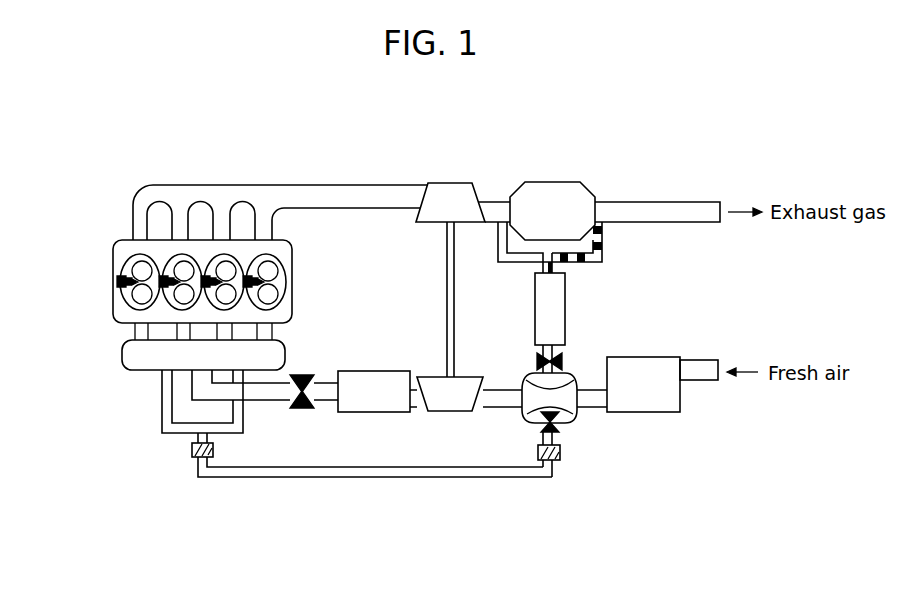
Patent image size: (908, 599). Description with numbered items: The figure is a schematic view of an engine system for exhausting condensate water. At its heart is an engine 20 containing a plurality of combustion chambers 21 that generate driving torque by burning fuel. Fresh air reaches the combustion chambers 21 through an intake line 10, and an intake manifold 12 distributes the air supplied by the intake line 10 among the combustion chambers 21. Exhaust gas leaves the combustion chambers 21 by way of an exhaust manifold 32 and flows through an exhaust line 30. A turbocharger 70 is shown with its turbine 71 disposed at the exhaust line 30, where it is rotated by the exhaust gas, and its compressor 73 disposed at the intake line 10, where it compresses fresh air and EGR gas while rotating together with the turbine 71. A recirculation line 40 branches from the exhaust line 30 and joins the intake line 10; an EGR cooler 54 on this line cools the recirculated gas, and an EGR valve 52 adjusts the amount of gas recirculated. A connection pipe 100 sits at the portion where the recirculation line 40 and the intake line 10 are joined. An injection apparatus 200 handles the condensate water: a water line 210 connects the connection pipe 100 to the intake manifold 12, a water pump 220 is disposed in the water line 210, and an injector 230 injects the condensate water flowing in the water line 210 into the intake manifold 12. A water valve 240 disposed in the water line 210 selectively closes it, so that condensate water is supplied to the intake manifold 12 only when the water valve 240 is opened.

The intake line 10 is at (317, 374).
The intake manifold 12 is at (122, 370).
The engine 20 is at (112, 303).
The combustion chambers 21 is at (120, 266).
The exhaust line 30 is at (393, 185).
The exhaust manifold 32 is at (136, 196).
The recirculation line 40 is at (497, 248).
The EGR valve 52 is at (574, 352).
The EGR cooler 54 is at (566, 285).
The turbocharger 70 is at (414, 297).
The turbine 71 is at (431, 224).
The compressor 73 is at (428, 377).
The connection pipe 100 is at (580, 424).
The injection apparatus 200 is at (376, 512).
The water line 210 is at (222, 478).
The water pump 220 is at (526, 495).
The injector 230 is at (214, 450).
The water valve 240 is at (560, 434).